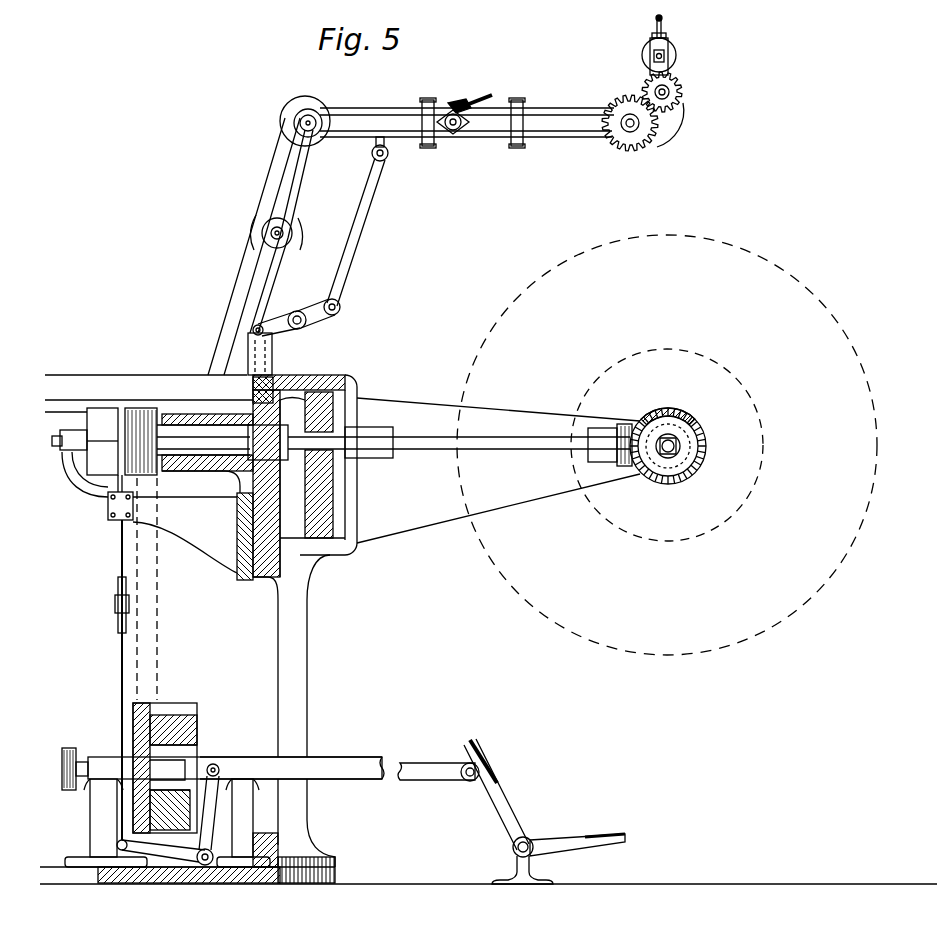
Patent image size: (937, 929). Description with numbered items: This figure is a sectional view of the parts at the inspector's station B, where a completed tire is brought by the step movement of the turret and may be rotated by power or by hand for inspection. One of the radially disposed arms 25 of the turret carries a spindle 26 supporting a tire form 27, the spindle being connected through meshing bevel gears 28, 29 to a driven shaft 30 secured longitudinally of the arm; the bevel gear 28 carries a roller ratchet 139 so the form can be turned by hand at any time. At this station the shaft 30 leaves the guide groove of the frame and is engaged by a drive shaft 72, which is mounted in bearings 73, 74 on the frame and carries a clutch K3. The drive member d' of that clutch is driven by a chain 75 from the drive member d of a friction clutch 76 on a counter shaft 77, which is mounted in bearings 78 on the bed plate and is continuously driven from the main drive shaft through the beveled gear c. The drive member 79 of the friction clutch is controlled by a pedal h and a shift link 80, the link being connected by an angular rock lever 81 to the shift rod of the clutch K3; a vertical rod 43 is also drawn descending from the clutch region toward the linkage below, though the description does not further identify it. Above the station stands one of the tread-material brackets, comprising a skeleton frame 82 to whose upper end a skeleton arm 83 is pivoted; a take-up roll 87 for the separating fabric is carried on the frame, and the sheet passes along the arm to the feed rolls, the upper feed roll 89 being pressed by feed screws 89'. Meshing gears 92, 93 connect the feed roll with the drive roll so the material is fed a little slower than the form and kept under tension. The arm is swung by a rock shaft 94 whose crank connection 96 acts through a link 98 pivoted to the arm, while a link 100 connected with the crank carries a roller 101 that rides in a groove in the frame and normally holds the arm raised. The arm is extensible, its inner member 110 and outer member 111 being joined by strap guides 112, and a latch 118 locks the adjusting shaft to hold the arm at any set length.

The take-up roll 87 is at (308, 108).
The skeleton arm 83 is at (352, 108).
The outer member 111 is at (571, 138).
The strap guides 112 is at (428, 98).
The latch 118 is at (463, 103).
The inner member 110 is at (352, 138).
The gear 92 is at (623, 147).
The gear 93 is at (684, 101).
The feed roll 89 is at (677, 56).
The feed screws 89' is at (675, 23).
The skeleton frame 82 is at (296, 198).
The link 98 is at (356, 274).
The crank connection 96 is at (340, 308).
The rock shaft 94 is at (304, 325).
The link 100 is at (272, 372).
The roller 101 is at (300, 381).
The radially disposed arm 25 is at (447, 520).
The drive shaft 72 is at (205, 425).
The bearing 74 is at (212, 472).
The clutch K3 is at (101, 410).
The drive member d' is at (141, 413).
The bearing 73 is at (62, 465).
The driven shaft 30 is at (491, 449).
The bevel gear 29 is at (632, 468).
The bevel gear 28 is at (700, 426).
The roller ratchet 139 is at (668, 410).
The spindle 26 is at (685, 472).
The form 27 is at (711, 645).
The connecting rod 43 is at (118, 657).
The chain 75 is at (150, 633).
The drive member d is at (165, 749).
The friction clutch 76 is at (186, 715).
The counter shaft 77 is at (218, 762).
The beveled gear c is at (65, 782).
The bearings 78 is at (98, 757).
The angular rock lever 81 is at (228, 866).
The drive member 79 is at (185, 860).
The shift link 80 is at (408, 782).
The inspector's station B is at (507, 811).
The pedal h is at (595, 835).